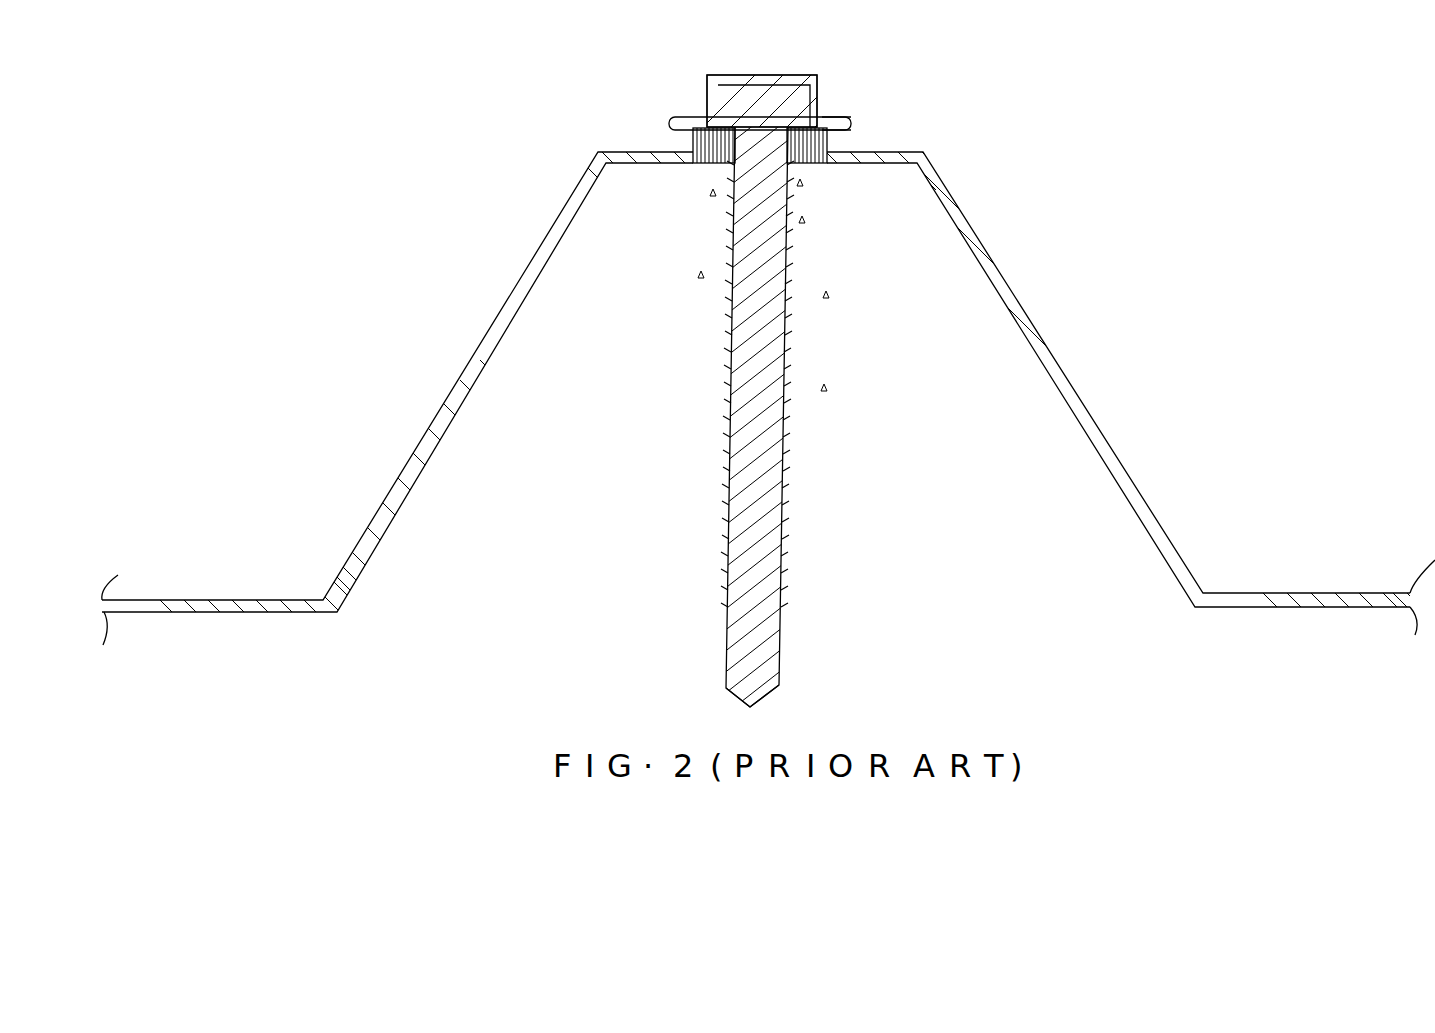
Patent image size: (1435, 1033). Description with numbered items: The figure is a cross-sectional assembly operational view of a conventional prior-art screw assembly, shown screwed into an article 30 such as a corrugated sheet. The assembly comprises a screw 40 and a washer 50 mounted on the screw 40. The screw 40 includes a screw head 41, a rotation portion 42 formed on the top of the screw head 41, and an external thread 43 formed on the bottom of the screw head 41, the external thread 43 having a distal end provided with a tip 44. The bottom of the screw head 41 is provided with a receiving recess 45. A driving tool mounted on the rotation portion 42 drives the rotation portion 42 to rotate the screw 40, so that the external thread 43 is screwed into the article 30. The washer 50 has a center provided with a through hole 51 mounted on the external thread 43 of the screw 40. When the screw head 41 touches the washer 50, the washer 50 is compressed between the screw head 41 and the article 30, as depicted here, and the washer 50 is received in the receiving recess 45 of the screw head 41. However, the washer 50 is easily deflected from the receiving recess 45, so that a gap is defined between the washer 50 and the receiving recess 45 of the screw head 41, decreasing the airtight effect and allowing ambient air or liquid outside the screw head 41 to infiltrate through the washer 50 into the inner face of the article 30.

The article 30 is at (480, 348).
The screw 40 is at (679, 94).
The screw head 41 is at (825, 126).
The rotation portion 42 is at (757, 92).
The external thread 43 is at (728, 432).
The tip 44 is at (745, 657).
The receiving recess 45 is at (706, 124).
The washer 50 is at (711, 142).
The through hole 51 is at (800, 142).